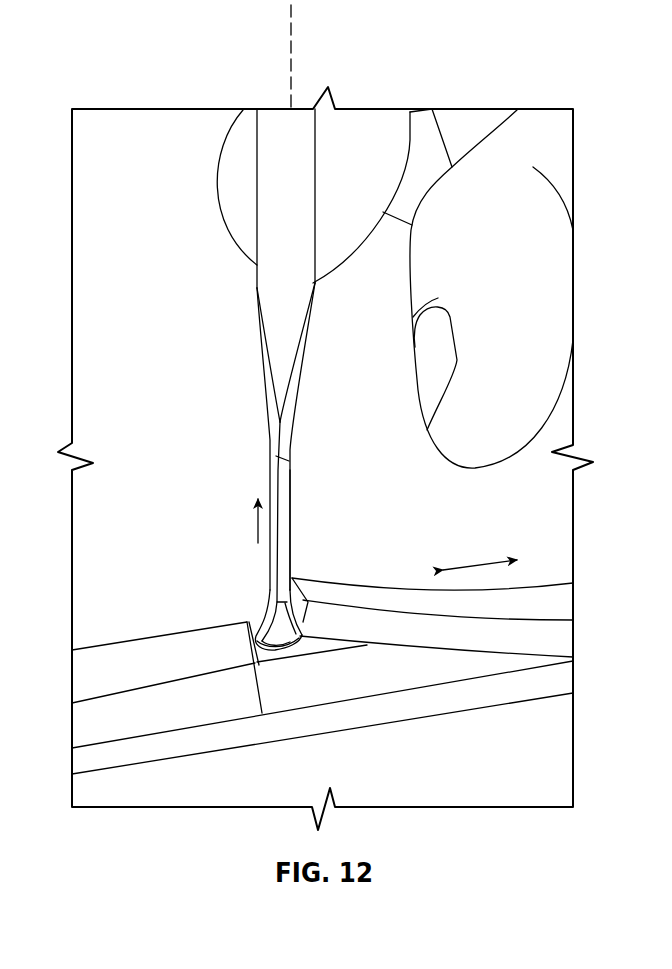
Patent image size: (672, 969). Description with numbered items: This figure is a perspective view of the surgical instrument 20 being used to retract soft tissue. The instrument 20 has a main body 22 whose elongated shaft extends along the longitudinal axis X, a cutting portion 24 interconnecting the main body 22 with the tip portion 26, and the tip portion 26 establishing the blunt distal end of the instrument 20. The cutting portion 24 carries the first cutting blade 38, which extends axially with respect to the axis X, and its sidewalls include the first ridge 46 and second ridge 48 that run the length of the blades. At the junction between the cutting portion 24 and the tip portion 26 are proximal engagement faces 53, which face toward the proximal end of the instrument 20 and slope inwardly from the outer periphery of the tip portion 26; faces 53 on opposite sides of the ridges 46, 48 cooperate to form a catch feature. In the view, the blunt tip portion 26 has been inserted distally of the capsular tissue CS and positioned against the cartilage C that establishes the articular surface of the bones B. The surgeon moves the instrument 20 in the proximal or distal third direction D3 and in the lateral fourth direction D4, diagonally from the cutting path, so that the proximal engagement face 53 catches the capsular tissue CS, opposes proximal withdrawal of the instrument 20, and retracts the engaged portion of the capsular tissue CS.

The surgical instrument 20 is at (295, 342).
The main body 22 is at (254, 201).
The cutting portion 24 is at (305, 573).
The tip portion 26 is at (344, 703).
The first cutting blade 38 is at (280, 500).
The first ridge 46 is at (273, 575).
The second ridge 48 is at (290, 557).
The proximal engagement face 53 is at (256, 613).
The axis X is at (293, 43).
The third direction D3 is at (257, 518).
The fourth direction D4 is at (473, 563).
The capsular tissue CS is at (548, 610).
The cartilage C is at (553, 677).
The bones B is at (555, 743).